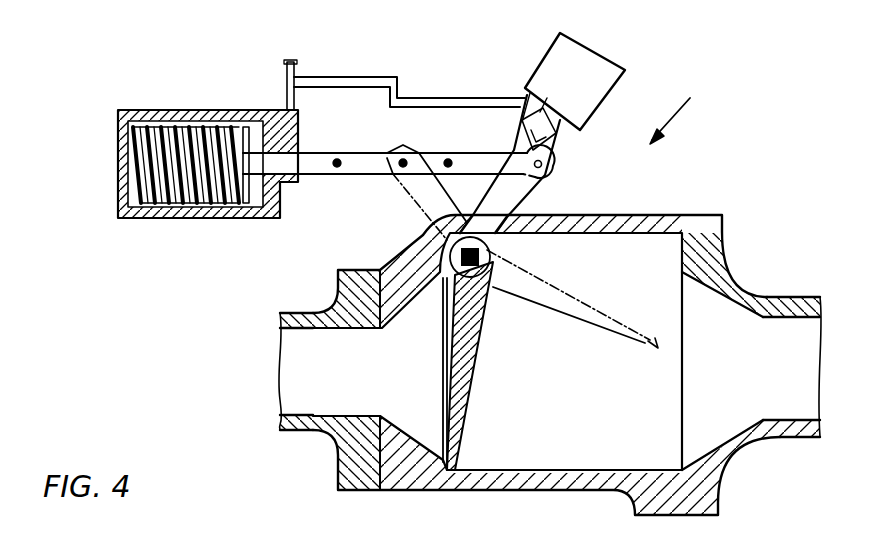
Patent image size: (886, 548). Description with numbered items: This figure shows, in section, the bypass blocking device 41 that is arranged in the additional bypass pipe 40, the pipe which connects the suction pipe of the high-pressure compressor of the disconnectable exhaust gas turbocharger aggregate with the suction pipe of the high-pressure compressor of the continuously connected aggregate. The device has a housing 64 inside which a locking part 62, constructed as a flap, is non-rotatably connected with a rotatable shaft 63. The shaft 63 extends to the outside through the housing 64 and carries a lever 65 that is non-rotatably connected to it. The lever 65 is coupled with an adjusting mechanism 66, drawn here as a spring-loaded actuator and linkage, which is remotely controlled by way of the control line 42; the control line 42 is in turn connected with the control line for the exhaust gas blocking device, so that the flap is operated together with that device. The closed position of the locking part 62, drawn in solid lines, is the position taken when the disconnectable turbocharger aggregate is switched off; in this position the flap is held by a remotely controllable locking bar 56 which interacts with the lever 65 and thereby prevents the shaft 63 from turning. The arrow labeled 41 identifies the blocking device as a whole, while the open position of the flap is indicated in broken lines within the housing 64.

The bypass pipe 40 is at (316, 316).
The bypass blocking device 41 is at (670, 116).
The control line 42 is at (297, 63).
The locking bar 56 is at (518, 141).
The locking part 62 is at (472, 368).
The shaft 63 is at (484, 243).
The housing 64 is at (633, 220).
The lever 65 is at (530, 189).
The adjusting mechanism 66 is at (372, 176).